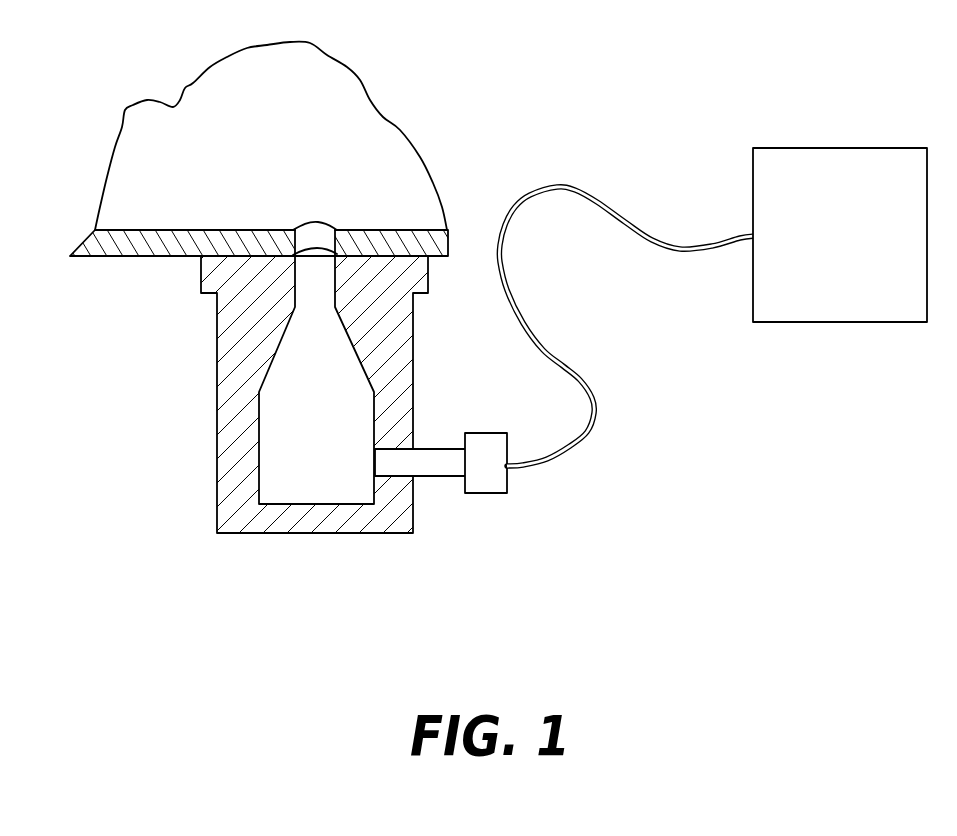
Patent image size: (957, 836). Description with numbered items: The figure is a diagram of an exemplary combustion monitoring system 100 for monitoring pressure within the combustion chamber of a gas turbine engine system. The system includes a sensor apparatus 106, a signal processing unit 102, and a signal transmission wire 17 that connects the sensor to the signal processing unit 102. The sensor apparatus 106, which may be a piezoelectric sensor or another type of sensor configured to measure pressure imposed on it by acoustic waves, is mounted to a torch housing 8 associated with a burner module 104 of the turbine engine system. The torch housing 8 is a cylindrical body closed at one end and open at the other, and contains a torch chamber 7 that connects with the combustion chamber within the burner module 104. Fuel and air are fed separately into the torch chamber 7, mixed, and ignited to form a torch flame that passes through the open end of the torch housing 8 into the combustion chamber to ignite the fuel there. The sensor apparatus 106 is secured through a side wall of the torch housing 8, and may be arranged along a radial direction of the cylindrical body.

The combustion monitoring system 100 is at (497, 166).
The signal processing unit 102 is at (787, 170).
The burner module 104 is at (128, 256).
The sensor apparatus 106 is at (433, 478).
The torch chamber 7 is at (320, 260).
The torch housing 8 is at (407, 408).
The signal transmission wire 17 is at (595, 390).